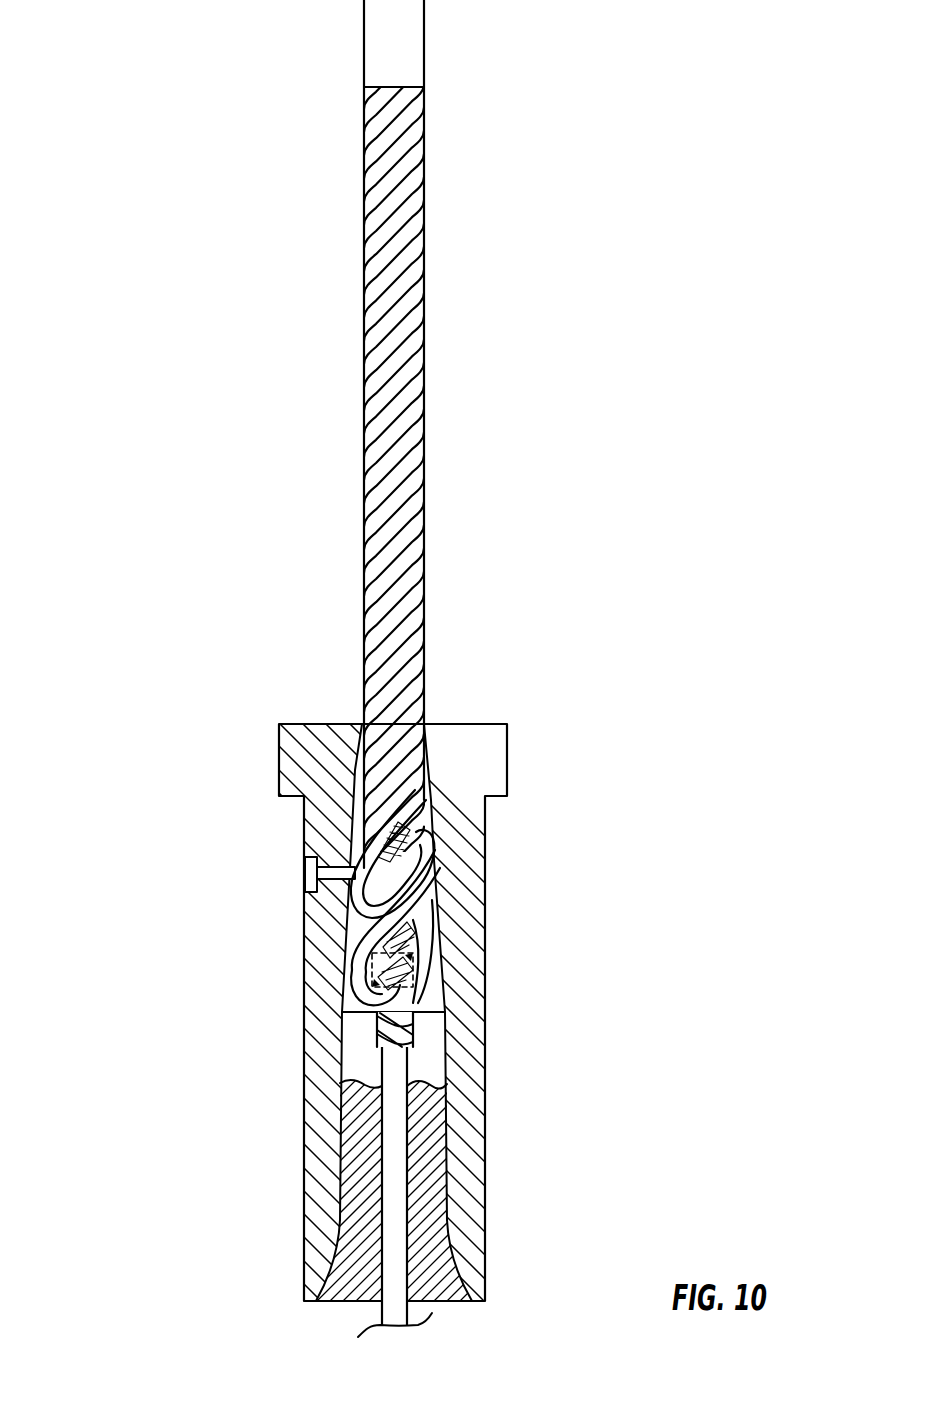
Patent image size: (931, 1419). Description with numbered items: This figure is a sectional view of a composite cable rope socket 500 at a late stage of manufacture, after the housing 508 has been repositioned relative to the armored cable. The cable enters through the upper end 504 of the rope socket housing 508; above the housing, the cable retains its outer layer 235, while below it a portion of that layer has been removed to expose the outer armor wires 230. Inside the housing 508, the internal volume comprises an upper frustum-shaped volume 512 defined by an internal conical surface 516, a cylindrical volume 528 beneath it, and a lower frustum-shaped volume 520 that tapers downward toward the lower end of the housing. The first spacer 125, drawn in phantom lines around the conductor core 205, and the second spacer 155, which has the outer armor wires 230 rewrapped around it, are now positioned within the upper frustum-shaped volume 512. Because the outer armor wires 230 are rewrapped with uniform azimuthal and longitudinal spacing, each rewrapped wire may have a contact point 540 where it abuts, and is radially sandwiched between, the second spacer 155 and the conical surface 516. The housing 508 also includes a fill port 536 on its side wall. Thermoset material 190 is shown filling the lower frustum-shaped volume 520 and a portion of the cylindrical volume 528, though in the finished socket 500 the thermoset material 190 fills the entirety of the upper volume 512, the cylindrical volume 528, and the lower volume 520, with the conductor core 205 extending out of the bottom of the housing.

The composite cable rope socket 500 is at (124, 772).
The outer layer 235 is at (412, 50).
The outer armor wires 230 is at (375, 707).
The upper end 504 is at (428, 717).
The rope socket housing 508 is at (290, 1060).
The fill port 536 is at (323, 873).
The contact point 540 is at (440, 867).
The second spacer 155 is at (390, 899).
The upper frustum-shaped volume 512 is at (433, 962).
The first spacer 125 is at (357, 973).
The internal conical surface 516 is at (440, 993).
The cylindrical volume 528 is at (433, 1069).
The thermoset material 190 is at (427, 1140).
The conductor core 205 is at (395, 1183).
The lower frustum-shaped volume 520 is at (452, 1277).